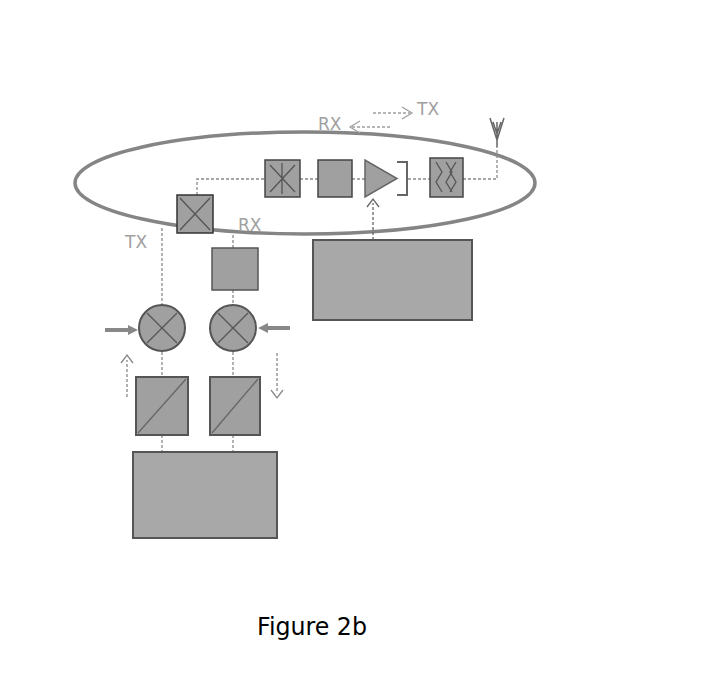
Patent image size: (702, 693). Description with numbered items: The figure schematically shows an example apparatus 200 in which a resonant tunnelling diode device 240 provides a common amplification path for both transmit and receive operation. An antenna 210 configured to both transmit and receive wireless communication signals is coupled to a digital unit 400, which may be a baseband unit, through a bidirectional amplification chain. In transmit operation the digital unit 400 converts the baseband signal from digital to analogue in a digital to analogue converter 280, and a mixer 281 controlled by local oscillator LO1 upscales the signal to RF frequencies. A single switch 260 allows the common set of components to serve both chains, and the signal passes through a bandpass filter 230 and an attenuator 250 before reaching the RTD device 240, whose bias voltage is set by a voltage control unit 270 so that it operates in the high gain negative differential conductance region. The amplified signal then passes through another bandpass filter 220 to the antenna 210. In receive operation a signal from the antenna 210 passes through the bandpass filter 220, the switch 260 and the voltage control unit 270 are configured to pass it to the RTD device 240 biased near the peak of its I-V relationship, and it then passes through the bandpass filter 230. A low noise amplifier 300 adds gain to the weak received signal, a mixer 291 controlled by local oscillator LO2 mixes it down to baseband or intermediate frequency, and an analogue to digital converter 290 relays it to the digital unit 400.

The apparatus 200 is at (542, 173).
The antenna 210 is at (498, 138).
The bandpass filter 220 is at (460, 195).
The bandpass filter 230 is at (288, 170).
The resonant tunnelling diode device 240 is at (382, 170).
The attenuator 250 is at (328, 167).
The switch 260 is at (180, 198).
The voltage control unit 270 is at (392, 280).
The digital to analogue converter 280 is at (153, 402).
The mixer 281 is at (142, 335).
The analogue to digital converter 290 is at (257, 407).
The mixer 291 is at (255, 342).
The low noise amplifier 300 is at (212, 272).
The digital unit 400 is at (205, 495).